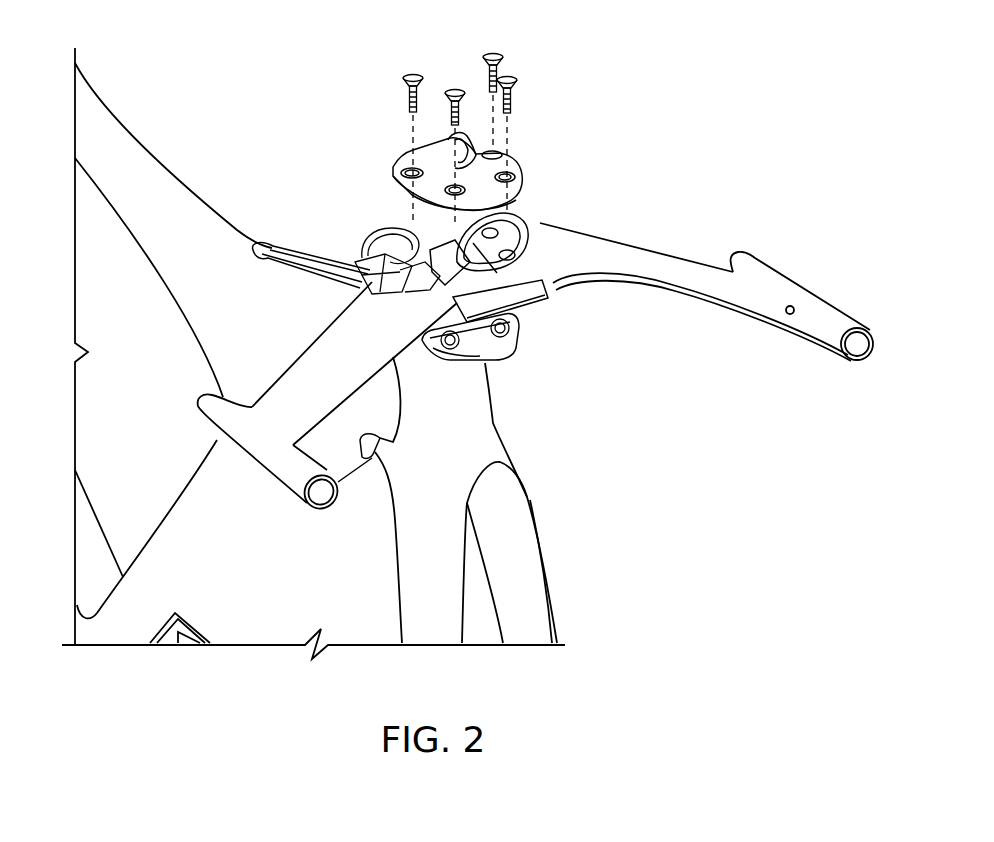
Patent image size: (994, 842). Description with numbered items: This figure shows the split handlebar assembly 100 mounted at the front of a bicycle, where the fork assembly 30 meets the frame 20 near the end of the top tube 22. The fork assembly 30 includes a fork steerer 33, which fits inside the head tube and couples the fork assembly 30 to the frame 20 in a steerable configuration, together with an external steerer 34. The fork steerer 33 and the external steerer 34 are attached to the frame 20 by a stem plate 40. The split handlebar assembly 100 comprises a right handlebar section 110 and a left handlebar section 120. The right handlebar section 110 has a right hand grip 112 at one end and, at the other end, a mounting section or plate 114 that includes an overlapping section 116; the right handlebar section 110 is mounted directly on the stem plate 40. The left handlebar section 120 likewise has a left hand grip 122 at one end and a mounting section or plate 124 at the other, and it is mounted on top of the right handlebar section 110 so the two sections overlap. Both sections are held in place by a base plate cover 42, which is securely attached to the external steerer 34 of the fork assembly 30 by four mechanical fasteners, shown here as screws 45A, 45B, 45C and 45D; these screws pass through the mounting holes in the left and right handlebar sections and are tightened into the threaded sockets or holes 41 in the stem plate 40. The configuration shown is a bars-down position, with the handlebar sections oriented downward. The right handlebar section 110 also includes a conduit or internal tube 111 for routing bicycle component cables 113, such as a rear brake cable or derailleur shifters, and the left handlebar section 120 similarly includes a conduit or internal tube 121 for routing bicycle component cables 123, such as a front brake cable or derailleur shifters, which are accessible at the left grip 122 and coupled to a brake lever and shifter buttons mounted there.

The frame 20 is at (313, 353).
The top tube 22 is at (246, 234).
The fork assembly 30 is at (478, 478).
The fork steerer 33 is at (372, 470).
The external steerer 34 is at (496, 425).
The stem plate 40 is at (517, 348).
The threaded sockets or holes 41 is at (437, 362).
The base plate cover 42 is at (512, 158).
The screw 45A is at (413, 77).
The screw 45B is at (498, 58).
The screw 45C is at (511, 82).
The screw 45D is at (455, 92).
The split handlebar assembly 100 is at (621, 258).
The right handlebar section 110 is at (286, 355).
The conduit or internal tube 111 is at (372, 270).
The right hand grip 112 is at (237, 460).
The bicycle component cables 113 is at (364, 247).
The mounting section or plate 114 is at (405, 281).
The overlapping section 116 is at (545, 306).
The left handlebar section 120 is at (716, 280).
The conduit or internal tube 121 is at (538, 218).
The left hand grip 122 is at (845, 300).
The bicycle component cables 123 is at (486, 217).
The mounting section or plate 124 is at (546, 226).